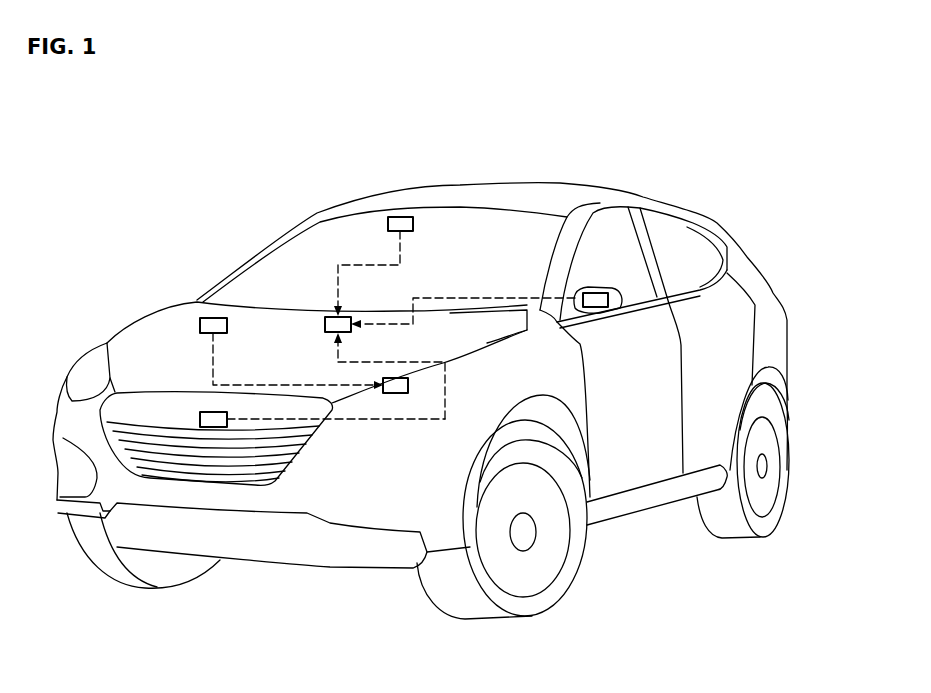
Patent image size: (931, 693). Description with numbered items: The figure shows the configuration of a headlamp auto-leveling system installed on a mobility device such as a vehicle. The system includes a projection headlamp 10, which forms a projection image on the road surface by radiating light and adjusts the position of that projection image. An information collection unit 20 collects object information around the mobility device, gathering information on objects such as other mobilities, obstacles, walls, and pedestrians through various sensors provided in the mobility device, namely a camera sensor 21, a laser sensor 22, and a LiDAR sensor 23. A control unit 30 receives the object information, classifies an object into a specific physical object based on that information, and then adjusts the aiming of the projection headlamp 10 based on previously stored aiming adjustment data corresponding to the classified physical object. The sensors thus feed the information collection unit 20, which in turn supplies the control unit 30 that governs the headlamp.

The projection headlamp 10 is at (395, 392).
The information collection unit 20 is at (338, 325).
The camera sensor 21 is at (400, 223).
The laser sensor 22 is at (597, 300).
The LiDAR sensor 23 is at (213, 427).
The control unit 30 is at (212, 322).